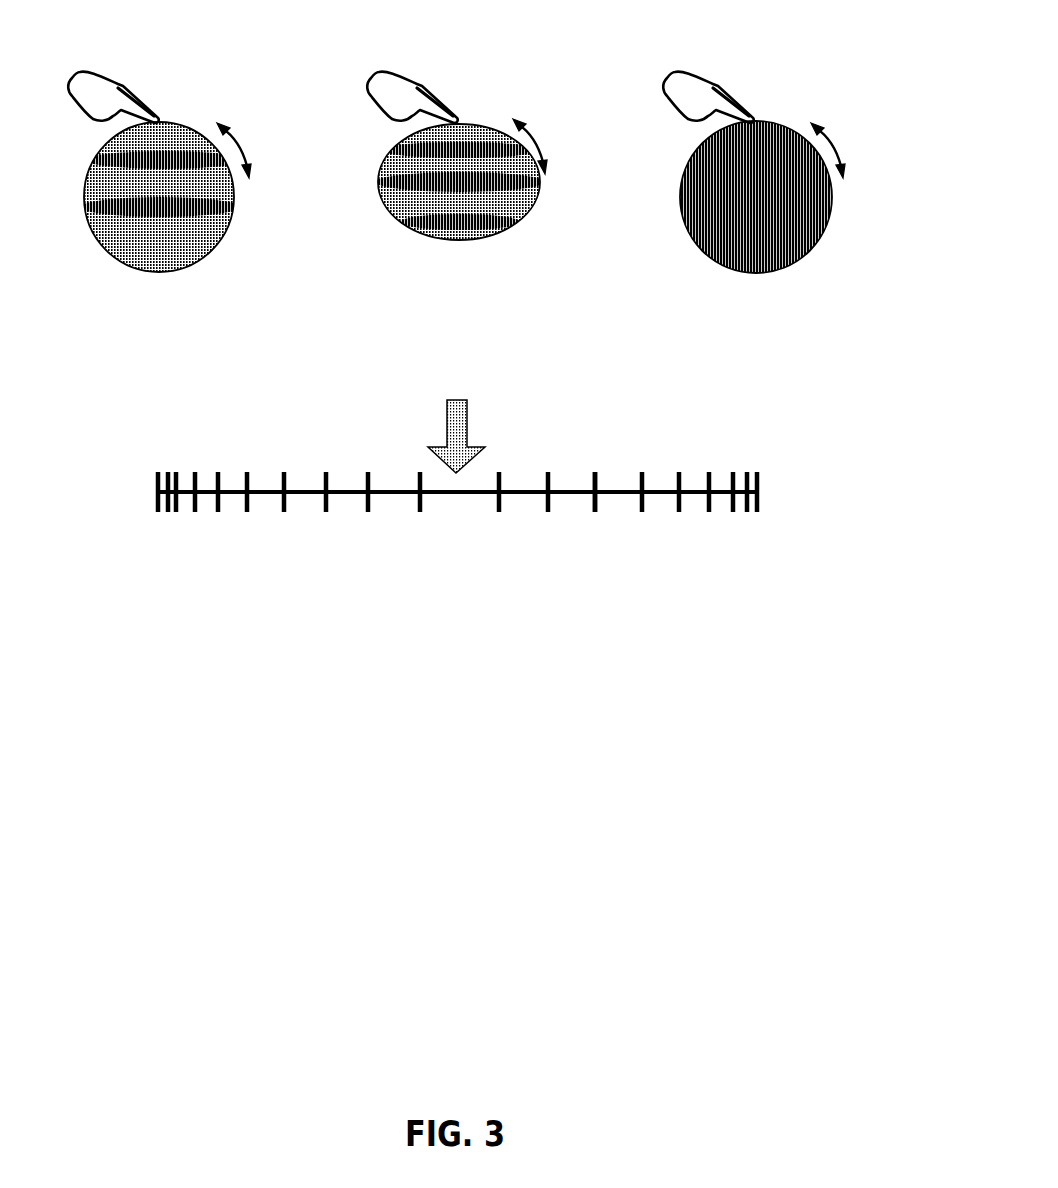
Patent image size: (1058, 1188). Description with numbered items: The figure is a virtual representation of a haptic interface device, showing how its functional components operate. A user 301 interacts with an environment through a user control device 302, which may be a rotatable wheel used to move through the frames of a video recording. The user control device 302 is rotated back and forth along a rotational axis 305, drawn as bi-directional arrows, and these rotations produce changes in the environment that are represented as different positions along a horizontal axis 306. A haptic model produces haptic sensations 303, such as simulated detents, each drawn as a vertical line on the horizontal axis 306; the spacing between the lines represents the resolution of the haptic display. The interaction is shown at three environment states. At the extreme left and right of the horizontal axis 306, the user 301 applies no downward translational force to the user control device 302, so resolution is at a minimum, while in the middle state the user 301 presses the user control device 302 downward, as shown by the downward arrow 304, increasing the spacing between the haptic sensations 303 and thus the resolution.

The user 301 is at (98, 78).
The user control device 302 is at (104, 252).
The haptic sensations 303 is at (294, 444).
The position indicator arrow 304 is at (467, 418).
The rotational axis 305 is at (242, 142).
The horizontal axis 306 is at (617, 490).